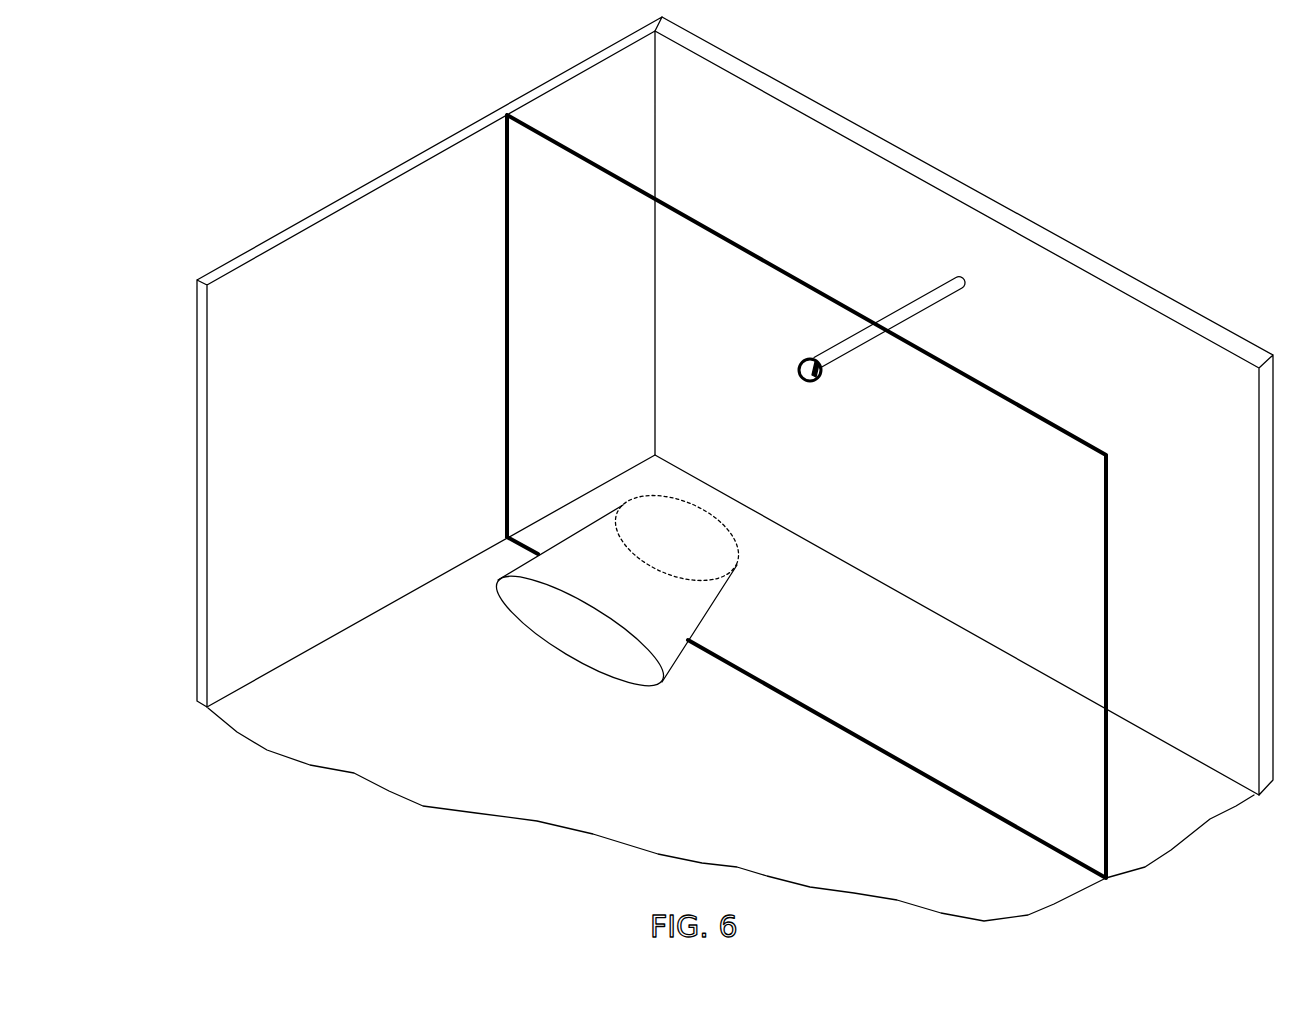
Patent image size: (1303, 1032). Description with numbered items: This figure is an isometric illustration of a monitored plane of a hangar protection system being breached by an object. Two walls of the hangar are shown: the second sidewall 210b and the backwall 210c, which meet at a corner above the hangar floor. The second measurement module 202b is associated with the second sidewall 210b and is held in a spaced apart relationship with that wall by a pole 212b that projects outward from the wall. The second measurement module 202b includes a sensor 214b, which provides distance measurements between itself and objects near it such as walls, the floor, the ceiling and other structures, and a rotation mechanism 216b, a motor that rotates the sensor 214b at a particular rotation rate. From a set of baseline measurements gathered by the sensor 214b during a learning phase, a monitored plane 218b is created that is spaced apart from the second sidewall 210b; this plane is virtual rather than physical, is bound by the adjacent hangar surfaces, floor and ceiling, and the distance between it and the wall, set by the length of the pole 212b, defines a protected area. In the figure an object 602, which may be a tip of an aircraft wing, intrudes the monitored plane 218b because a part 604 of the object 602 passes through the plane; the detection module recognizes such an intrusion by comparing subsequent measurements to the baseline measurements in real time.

The second sidewall 210b is at (1005, 210).
The backwall 210c is at (317, 212).
The pole 212b is at (913, 306).
The sensor 214b is at (822, 422).
The rotation mechanism 216b is at (810, 360).
The monitored plane 218b is at (1111, 586).
The second measurement module 202b is at (831, 329).
The object 602 is at (462, 627).
The part 604 is at (737, 564).